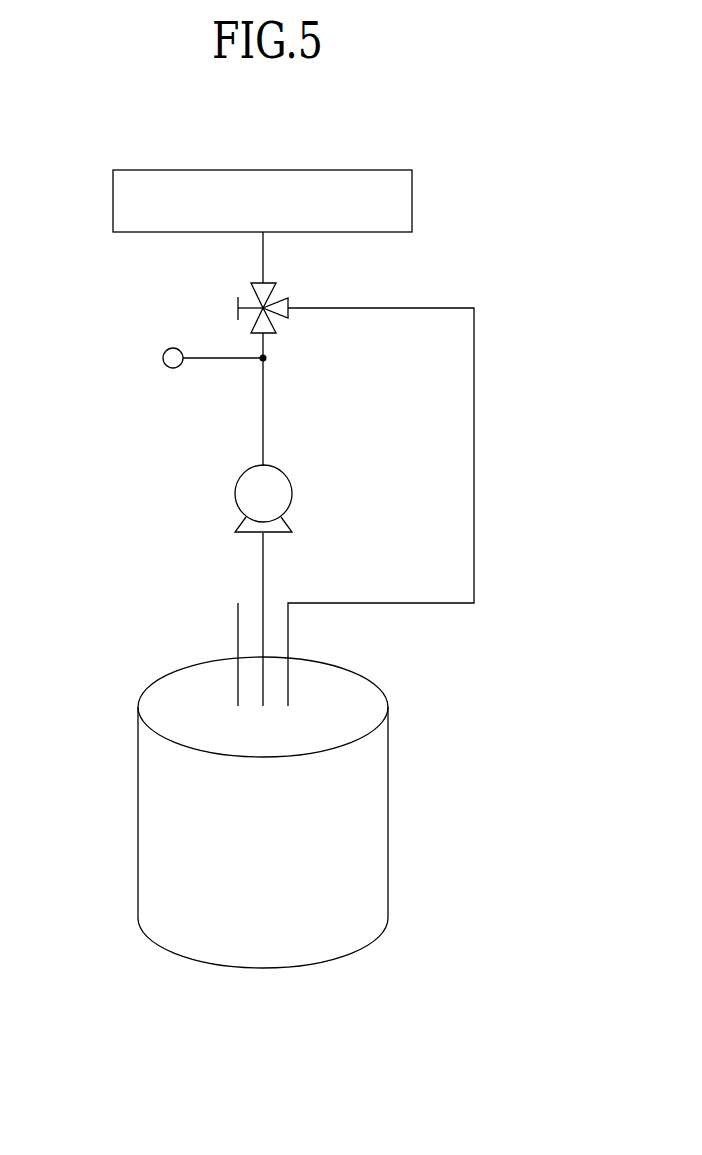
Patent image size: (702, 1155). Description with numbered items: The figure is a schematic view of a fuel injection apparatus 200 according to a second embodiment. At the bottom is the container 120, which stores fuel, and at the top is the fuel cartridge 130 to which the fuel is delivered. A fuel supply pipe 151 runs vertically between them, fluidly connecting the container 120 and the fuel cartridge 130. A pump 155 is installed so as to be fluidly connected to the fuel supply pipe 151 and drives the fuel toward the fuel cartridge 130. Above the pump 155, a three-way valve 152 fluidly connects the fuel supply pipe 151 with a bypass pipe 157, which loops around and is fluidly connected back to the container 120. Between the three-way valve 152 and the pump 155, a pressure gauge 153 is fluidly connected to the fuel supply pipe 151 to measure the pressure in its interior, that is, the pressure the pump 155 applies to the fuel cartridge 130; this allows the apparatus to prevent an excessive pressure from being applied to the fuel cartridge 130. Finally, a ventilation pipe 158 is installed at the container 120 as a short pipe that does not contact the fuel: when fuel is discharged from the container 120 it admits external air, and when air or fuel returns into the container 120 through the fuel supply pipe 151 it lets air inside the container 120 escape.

The fuel injection apparatus 200 is at (257, 139).
The fuel cartridge 130 is at (412, 200).
The 3-way valve 152 is at (252, 290).
The pressure gauge 153 is at (163, 358).
The fuel supply pipe 151 is at (262, 428).
The pump 155 is at (235, 494).
The bypass pipe 157 is at (475, 440).
The ventilation pipe 158 is at (237, 628).
The container 120 is at (158, 812).